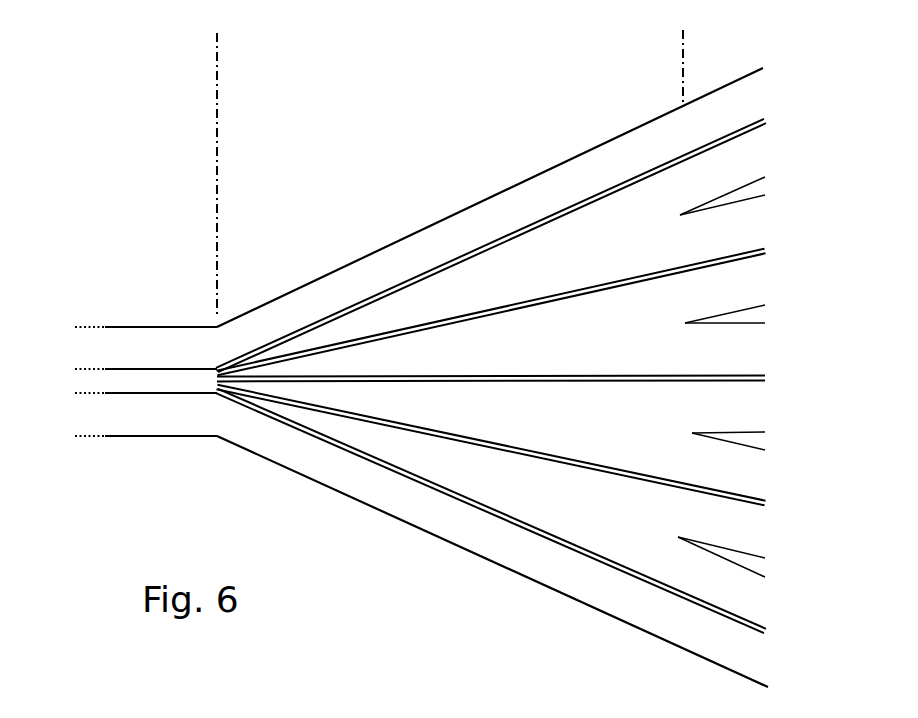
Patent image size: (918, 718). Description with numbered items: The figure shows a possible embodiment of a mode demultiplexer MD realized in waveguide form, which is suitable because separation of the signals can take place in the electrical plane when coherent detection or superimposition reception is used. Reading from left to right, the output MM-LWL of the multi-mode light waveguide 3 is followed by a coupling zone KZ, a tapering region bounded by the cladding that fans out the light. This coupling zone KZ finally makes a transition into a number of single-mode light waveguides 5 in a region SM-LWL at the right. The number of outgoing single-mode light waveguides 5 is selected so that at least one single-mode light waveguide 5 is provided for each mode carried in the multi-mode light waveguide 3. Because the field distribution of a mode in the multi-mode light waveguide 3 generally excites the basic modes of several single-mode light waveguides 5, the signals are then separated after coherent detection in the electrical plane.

The multi-mode light waveguide 3 is at (120, 342).
The single-mode light waveguides 5 is at (763, 624).
The output of the multi-mode light waveguide MM-LWL is at (157, 174).
The coupling zone KZ is at (490, 180).
The single-mode light waveguide region SM-LWL is at (738, 64).
The mode demultiplexer MD is at (401, 537).